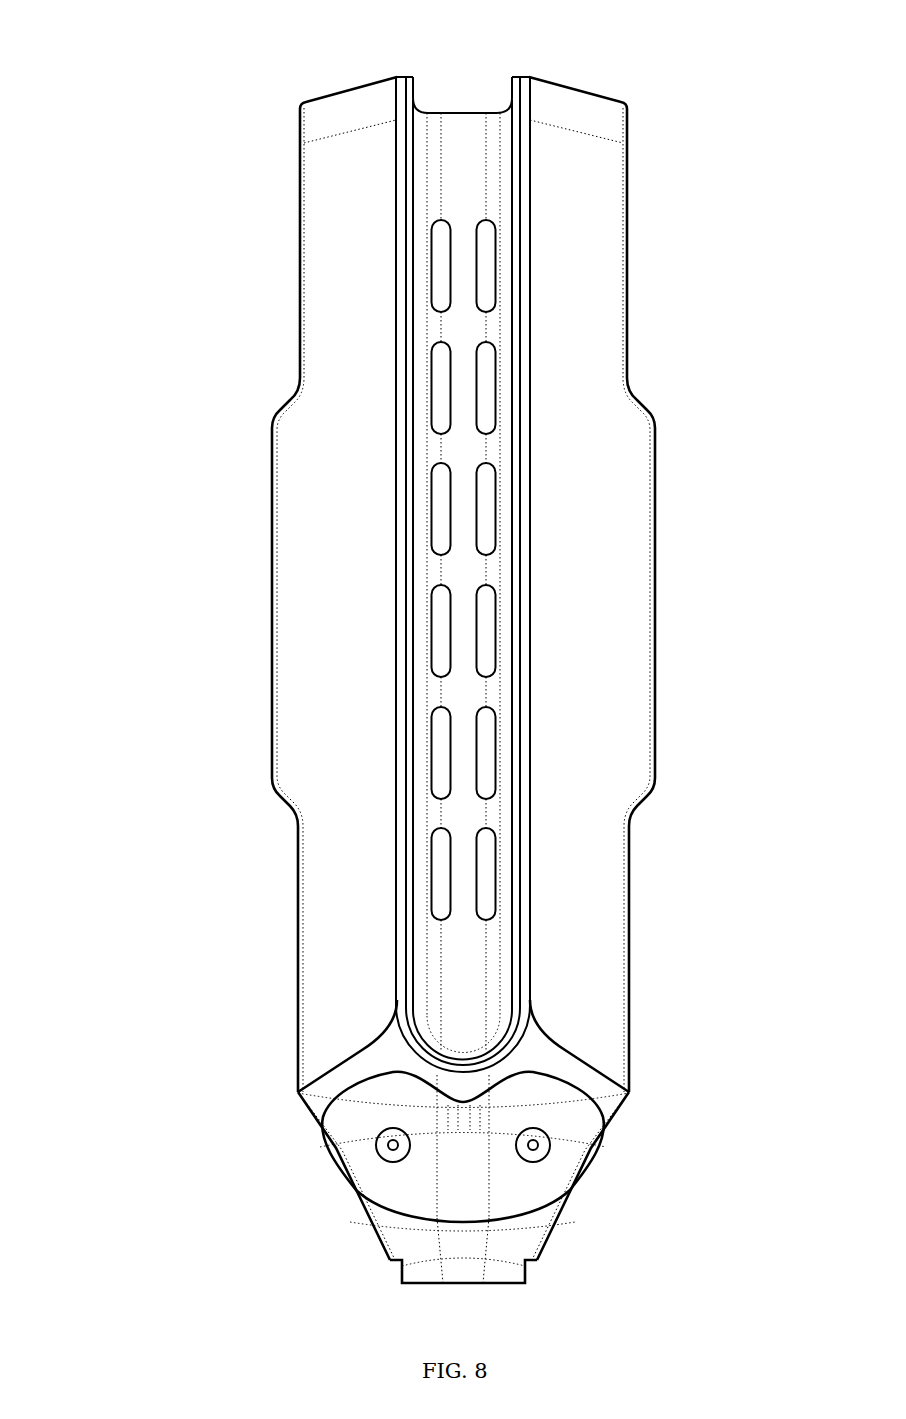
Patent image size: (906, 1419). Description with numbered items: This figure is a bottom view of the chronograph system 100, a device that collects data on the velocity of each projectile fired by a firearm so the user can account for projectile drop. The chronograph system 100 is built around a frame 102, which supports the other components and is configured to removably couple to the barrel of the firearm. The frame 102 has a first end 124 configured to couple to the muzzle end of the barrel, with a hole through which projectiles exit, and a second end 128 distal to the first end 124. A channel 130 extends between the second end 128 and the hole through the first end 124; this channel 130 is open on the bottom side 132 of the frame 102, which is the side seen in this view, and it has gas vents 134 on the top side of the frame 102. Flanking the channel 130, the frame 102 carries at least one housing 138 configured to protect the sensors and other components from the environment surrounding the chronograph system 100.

The chronograph system 100 is at (165, 54).
The frame 102 is at (527, 1057).
The first end 124 is at (403, 1285).
The second end 128 is at (375, 83).
The channel 130 is at (476, 128).
The bottom side 132 is at (402, 865).
The gas vents 134 is at (485, 762).
The housing 138 is at (589, 229).